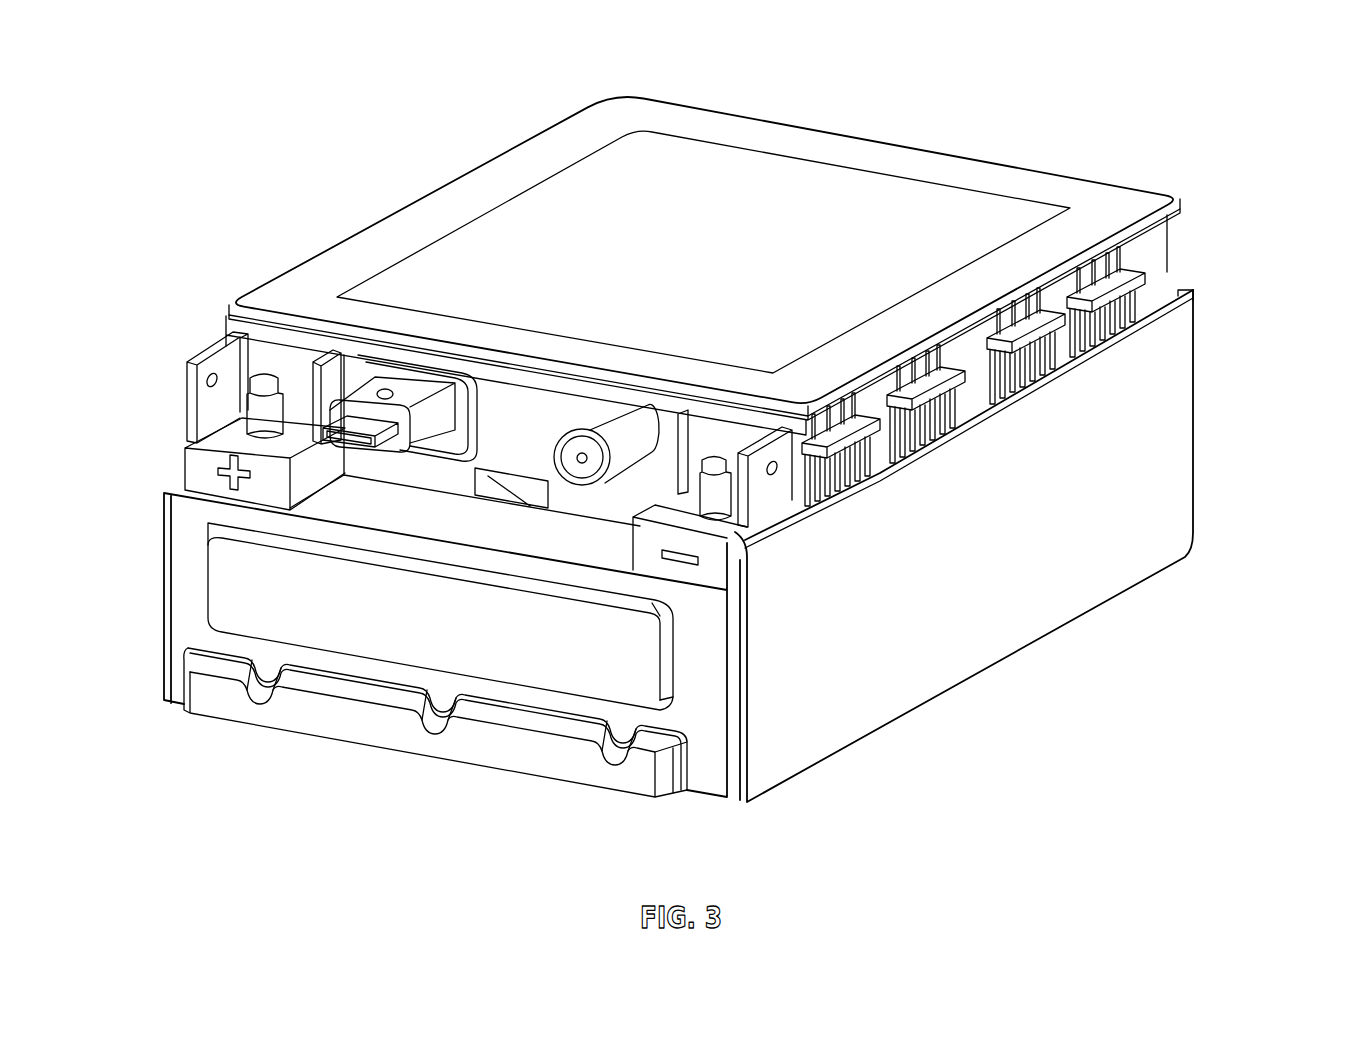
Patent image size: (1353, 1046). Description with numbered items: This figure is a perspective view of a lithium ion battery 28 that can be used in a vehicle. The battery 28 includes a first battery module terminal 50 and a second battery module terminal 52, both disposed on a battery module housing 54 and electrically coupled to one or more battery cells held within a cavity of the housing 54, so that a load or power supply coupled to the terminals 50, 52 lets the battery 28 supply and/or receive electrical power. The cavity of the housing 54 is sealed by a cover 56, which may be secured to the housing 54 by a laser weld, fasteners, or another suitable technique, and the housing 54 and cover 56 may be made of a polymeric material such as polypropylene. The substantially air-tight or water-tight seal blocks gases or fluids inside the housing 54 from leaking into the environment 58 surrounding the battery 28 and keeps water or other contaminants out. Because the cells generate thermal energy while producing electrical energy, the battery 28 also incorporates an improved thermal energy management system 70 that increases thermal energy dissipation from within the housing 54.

The battery 28 is at (701, 437).
The first battery module terminal 50 is at (258, 408).
The second battery module terminal 52 is at (720, 492).
The battery module housing 54 is at (1107, 553).
The cover 56 is at (912, 212).
The environment 58 is at (1320, 357).
The thermal energy management system 70 is at (155, 621).